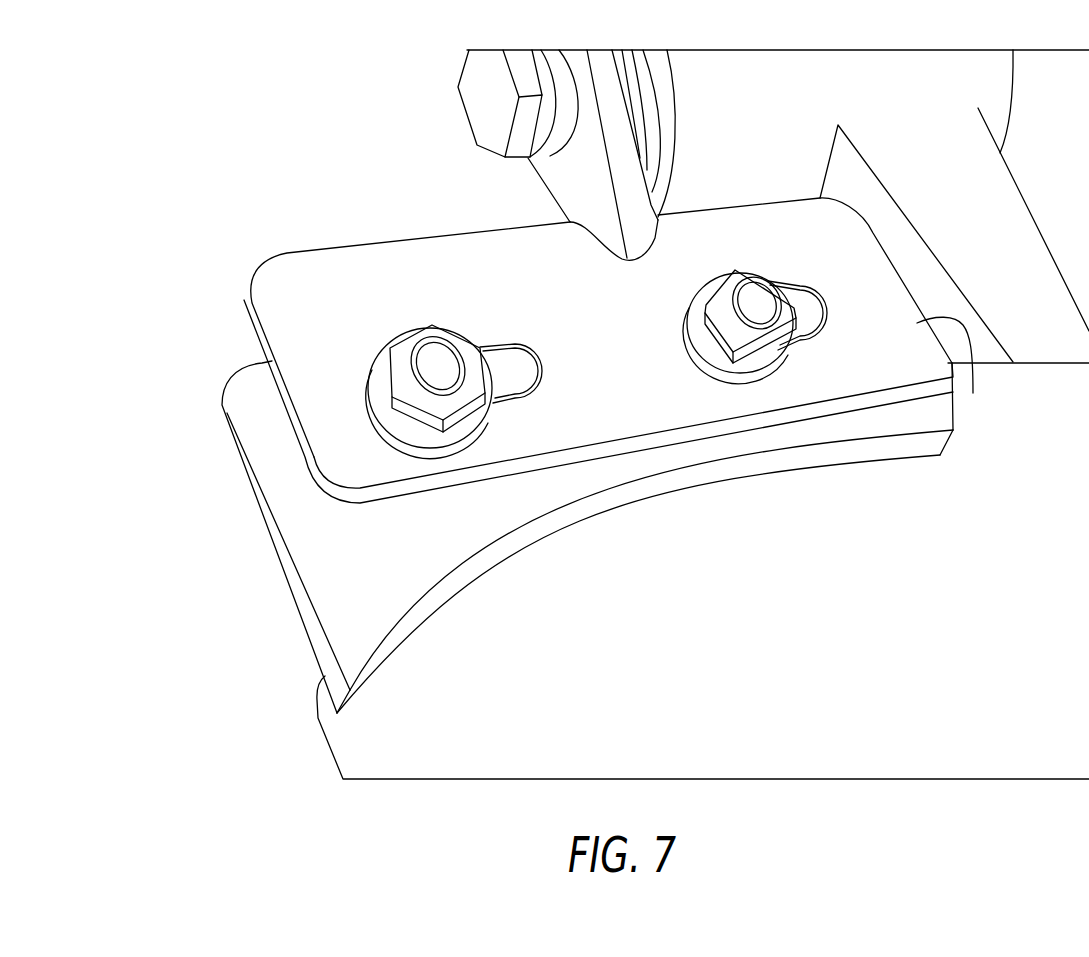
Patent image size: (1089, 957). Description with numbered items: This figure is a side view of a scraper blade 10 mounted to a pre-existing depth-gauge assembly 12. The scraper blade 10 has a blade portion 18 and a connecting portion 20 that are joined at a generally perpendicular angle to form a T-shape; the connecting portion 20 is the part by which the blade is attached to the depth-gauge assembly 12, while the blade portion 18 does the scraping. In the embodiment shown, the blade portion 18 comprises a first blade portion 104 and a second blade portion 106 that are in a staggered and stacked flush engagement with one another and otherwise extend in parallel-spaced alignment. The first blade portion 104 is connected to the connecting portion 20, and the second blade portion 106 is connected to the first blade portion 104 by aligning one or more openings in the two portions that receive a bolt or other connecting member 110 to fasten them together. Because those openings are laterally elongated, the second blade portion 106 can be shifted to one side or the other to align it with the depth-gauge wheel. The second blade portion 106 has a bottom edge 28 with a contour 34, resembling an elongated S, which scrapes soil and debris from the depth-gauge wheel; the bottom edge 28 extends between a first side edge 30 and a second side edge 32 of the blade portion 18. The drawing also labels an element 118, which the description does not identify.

The scraper blade 10 is at (190, 388).
The depth-gauge assembly 12 is at (405, 97).
The blade portion 18 is at (217, 447).
The connecting portion 20 is at (550, 178).
The bottom edge 28 is at (673, 487).
The first side edge 30 is at (313, 457).
The second side edge 32 is at (973, 393).
The contour 34 is at (573, 547).
The first blade portion 104 is at (247, 315).
The second blade portion 106 is at (250, 477).
The connecting member 110 is at (413, 397).
The retaining tab 118 is at (518, 340).